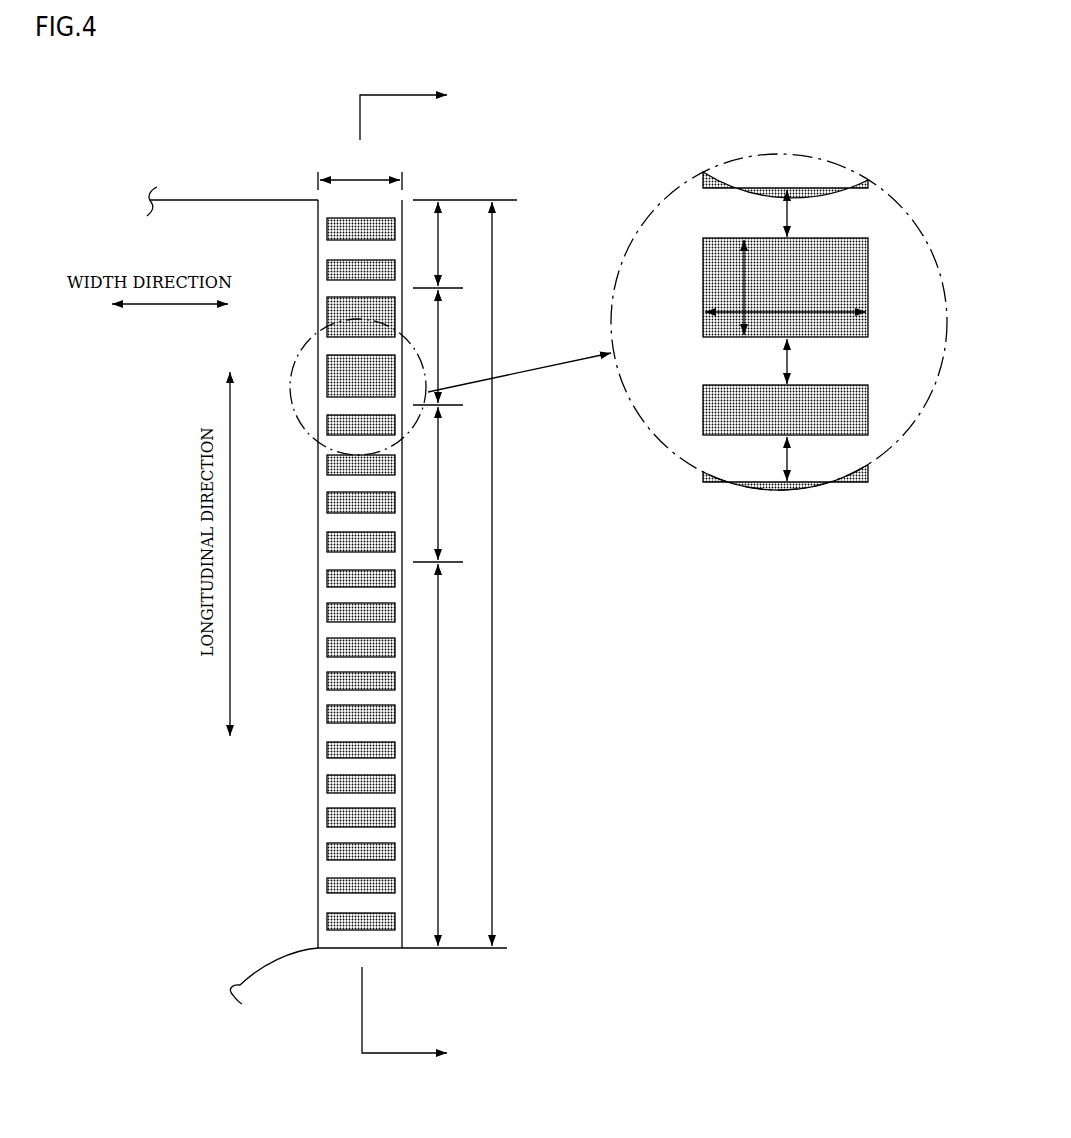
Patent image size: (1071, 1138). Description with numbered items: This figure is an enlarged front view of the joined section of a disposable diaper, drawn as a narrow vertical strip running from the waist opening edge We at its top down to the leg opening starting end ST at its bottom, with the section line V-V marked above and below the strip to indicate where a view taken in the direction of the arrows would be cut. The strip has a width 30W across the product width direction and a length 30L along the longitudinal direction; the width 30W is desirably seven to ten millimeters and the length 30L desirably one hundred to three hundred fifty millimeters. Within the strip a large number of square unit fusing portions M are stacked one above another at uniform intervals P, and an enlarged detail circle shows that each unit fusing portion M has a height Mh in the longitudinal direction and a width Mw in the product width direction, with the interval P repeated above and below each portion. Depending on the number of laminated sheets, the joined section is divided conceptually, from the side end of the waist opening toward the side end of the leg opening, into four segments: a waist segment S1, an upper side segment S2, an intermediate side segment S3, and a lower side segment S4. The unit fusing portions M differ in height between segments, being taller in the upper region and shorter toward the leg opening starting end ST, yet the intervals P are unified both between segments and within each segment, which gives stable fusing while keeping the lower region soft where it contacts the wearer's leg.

The waist opening edge We is at (286, 200).
The leg opening starting end ST is at (342, 962).
The width of the joined section 30W is at (360, 169).
The length of the joined section 30L is at (522, 574).
The section line V- V is at (415, 575).
The unit fusing portion M is at (332, 236).
The interval between unit fusing portions P is at (339, 288).
The height of the unit fusing portion Mh is at (742, 287).
The width of the unit fusing portion Mw is at (785, 313).
The waist segment S1 is at (447, 245).
The upper side segment S2 is at (447, 347).
The intermediate side segment S3 is at (447, 484).
The lower side segment S4 is at (459, 755).